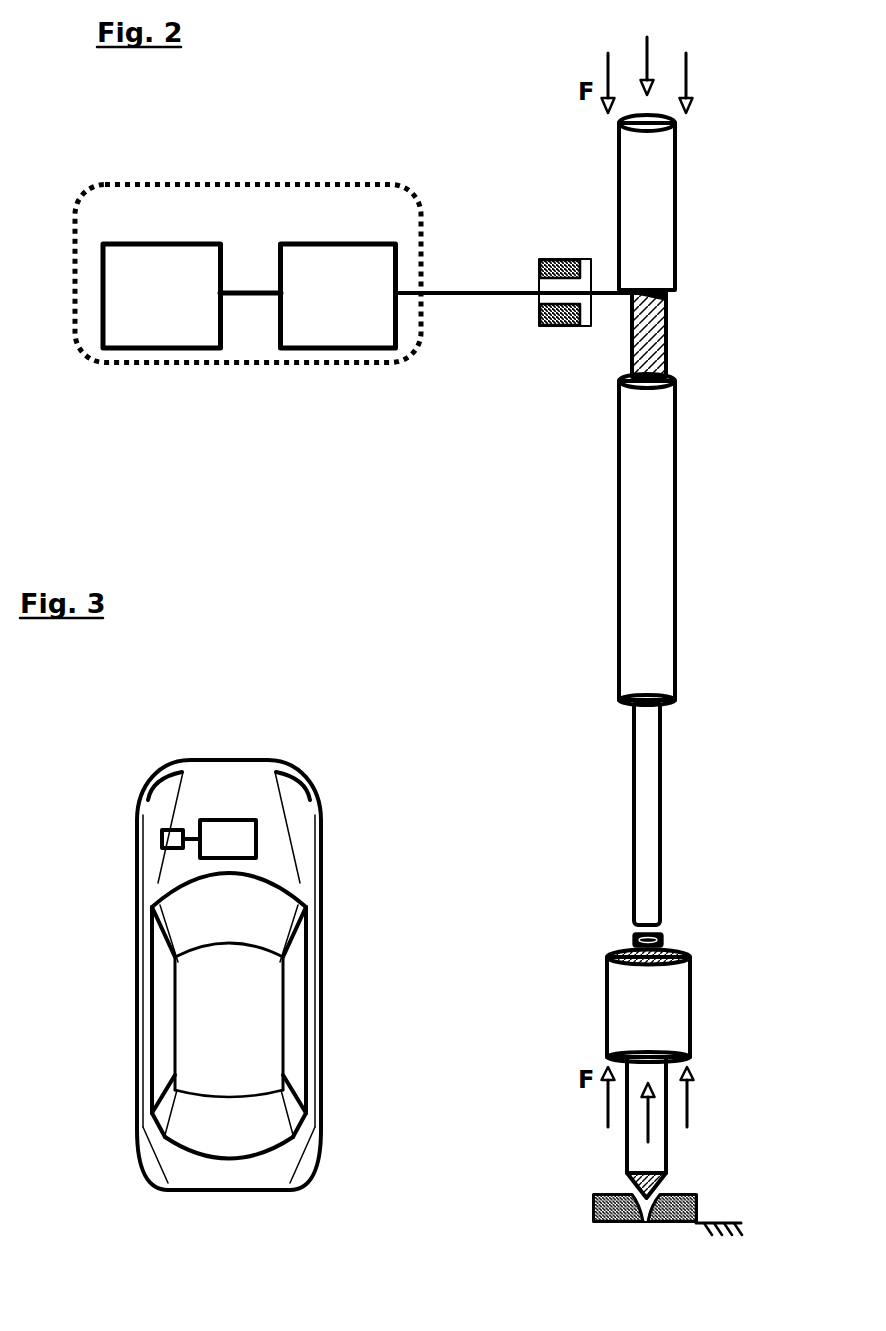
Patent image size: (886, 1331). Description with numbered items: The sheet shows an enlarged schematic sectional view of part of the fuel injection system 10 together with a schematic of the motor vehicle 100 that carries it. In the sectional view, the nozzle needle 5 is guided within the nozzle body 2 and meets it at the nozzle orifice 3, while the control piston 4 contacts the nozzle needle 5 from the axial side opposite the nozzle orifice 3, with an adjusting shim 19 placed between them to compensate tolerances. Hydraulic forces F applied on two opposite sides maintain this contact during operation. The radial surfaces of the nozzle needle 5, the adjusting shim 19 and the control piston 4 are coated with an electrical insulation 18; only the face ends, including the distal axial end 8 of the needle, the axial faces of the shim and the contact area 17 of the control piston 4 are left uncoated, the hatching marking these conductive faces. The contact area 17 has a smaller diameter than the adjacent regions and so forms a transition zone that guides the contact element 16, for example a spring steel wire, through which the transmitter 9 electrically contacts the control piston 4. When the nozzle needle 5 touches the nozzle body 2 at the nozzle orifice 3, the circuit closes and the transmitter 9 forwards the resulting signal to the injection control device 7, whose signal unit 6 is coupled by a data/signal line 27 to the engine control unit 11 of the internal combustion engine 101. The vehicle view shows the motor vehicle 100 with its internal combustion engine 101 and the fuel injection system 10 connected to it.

In FIG. 2, the nozzle body 2 is at (592, 1207).
In FIG. 2, the nozzle orifice 3 is at (648, 1228).
In FIG. 2, the control piston 4 is at (668, 458).
In FIG. 2, the nozzle needle 5 is at (618, 1018).
In FIG. 2, the signal unit 6 is at (360, 242).
In FIG. 2, the injection control device 7 is at (253, 369).
In FIG. 2, the distal axial end 8 is at (670, 1186).
In FIG. 2, the transmitter 9 is at (556, 258).
In FIG. 2, the fuel injection system 10 is at (386, 117).
In FIG. 3, the fuel injection system 10 is at (162, 839).
In FIG. 2, the engine control unit 11 is at (156, 247).
In FIG. 2, the contact element 16 is at (612, 297).
In FIG. 2, the contact area 17 is at (663, 352).
In FIG. 2, the electrical insulation 18 is at (684, 226).
In FIG. 2, the adjusting shim 19 is at (632, 937).
In FIG. 2, the data/signal line 27 is at (450, 293).
In FIG. 3, the motor vehicle 100 is at (106, 738).
In FIG. 3, the internal combustion engine 101 is at (239, 818).